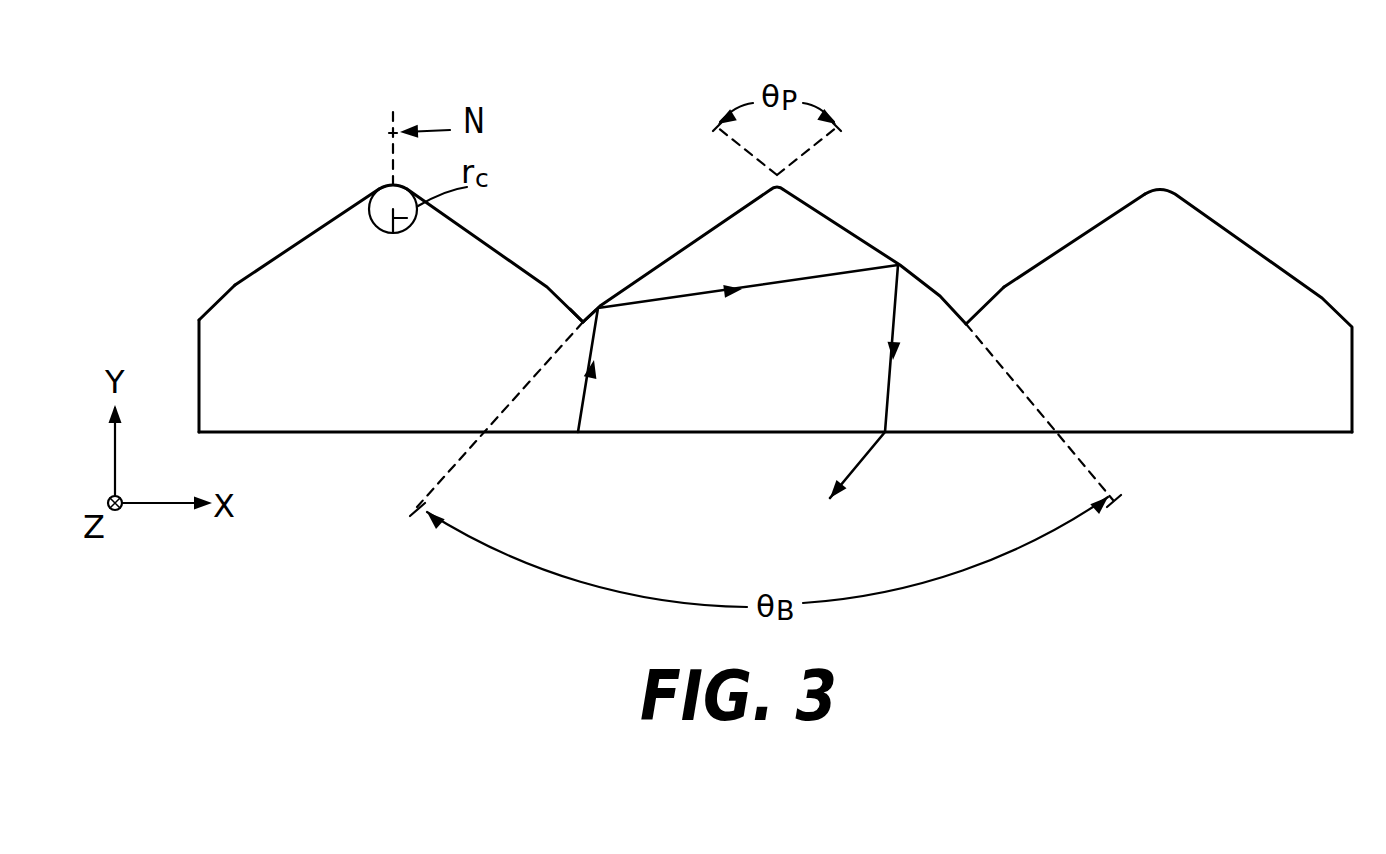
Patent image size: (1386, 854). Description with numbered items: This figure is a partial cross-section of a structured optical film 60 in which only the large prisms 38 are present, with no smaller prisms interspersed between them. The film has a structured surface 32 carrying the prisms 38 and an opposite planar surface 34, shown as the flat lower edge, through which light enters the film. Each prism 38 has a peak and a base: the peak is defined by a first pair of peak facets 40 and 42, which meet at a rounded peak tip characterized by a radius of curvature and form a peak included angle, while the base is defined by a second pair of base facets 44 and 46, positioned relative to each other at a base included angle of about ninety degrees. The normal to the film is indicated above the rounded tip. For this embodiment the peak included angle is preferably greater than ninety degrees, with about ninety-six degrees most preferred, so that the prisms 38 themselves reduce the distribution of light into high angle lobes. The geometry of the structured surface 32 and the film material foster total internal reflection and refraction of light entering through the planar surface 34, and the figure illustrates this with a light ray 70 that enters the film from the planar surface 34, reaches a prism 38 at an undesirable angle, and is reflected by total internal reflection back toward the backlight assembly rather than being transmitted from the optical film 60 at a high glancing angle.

The optical film 60 is at (1204, 115).
The structured surface 32 is at (1062, 247).
The planar surface 34 is at (1215, 434).
The prism 38 is at (333, 230).
The peak facet 40 is at (270, 258).
The peak facet 42 is at (480, 232).
The base facet 44 is at (218, 302).
The base facet 46 is at (567, 302).
The light ray 70 is at (677, 300).